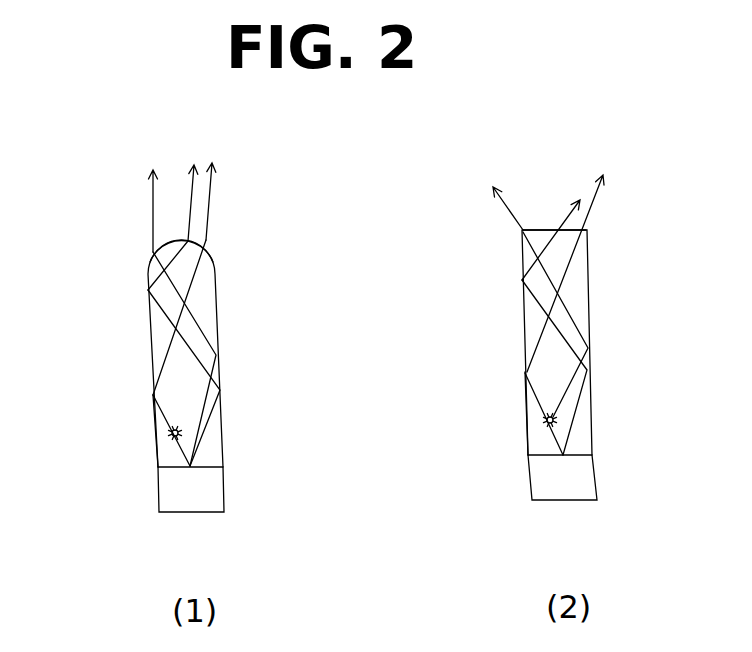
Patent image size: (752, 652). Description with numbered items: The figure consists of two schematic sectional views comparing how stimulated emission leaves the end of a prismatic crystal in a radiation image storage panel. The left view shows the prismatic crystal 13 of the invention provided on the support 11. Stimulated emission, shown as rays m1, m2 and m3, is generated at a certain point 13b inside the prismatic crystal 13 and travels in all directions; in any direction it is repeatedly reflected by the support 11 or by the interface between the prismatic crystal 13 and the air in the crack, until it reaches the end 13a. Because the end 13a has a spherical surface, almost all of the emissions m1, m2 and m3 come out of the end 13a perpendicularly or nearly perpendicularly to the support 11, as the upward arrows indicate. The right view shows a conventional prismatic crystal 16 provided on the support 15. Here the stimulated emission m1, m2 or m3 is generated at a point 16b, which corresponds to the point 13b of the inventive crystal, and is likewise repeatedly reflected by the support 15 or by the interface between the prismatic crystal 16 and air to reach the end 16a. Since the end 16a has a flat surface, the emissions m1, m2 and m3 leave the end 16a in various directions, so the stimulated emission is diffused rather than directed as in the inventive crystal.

The support 11 is at (225, 485).
The prismatic crystal 13 is at (217, 308).
The end 13a is at (207, 237).
The point 13b is at (157, 448).
The support 15 is at (597, 475).
The prismatic crystal 16 is at (590, 295).
The end 16a is at (585, 224).
The point 16b is at (545, 428).
The stimulated emission m1 is at (150, 202).
The stimulated emission m2 is at (188, 222).
The stimulated emission m3 is at (210, 200).